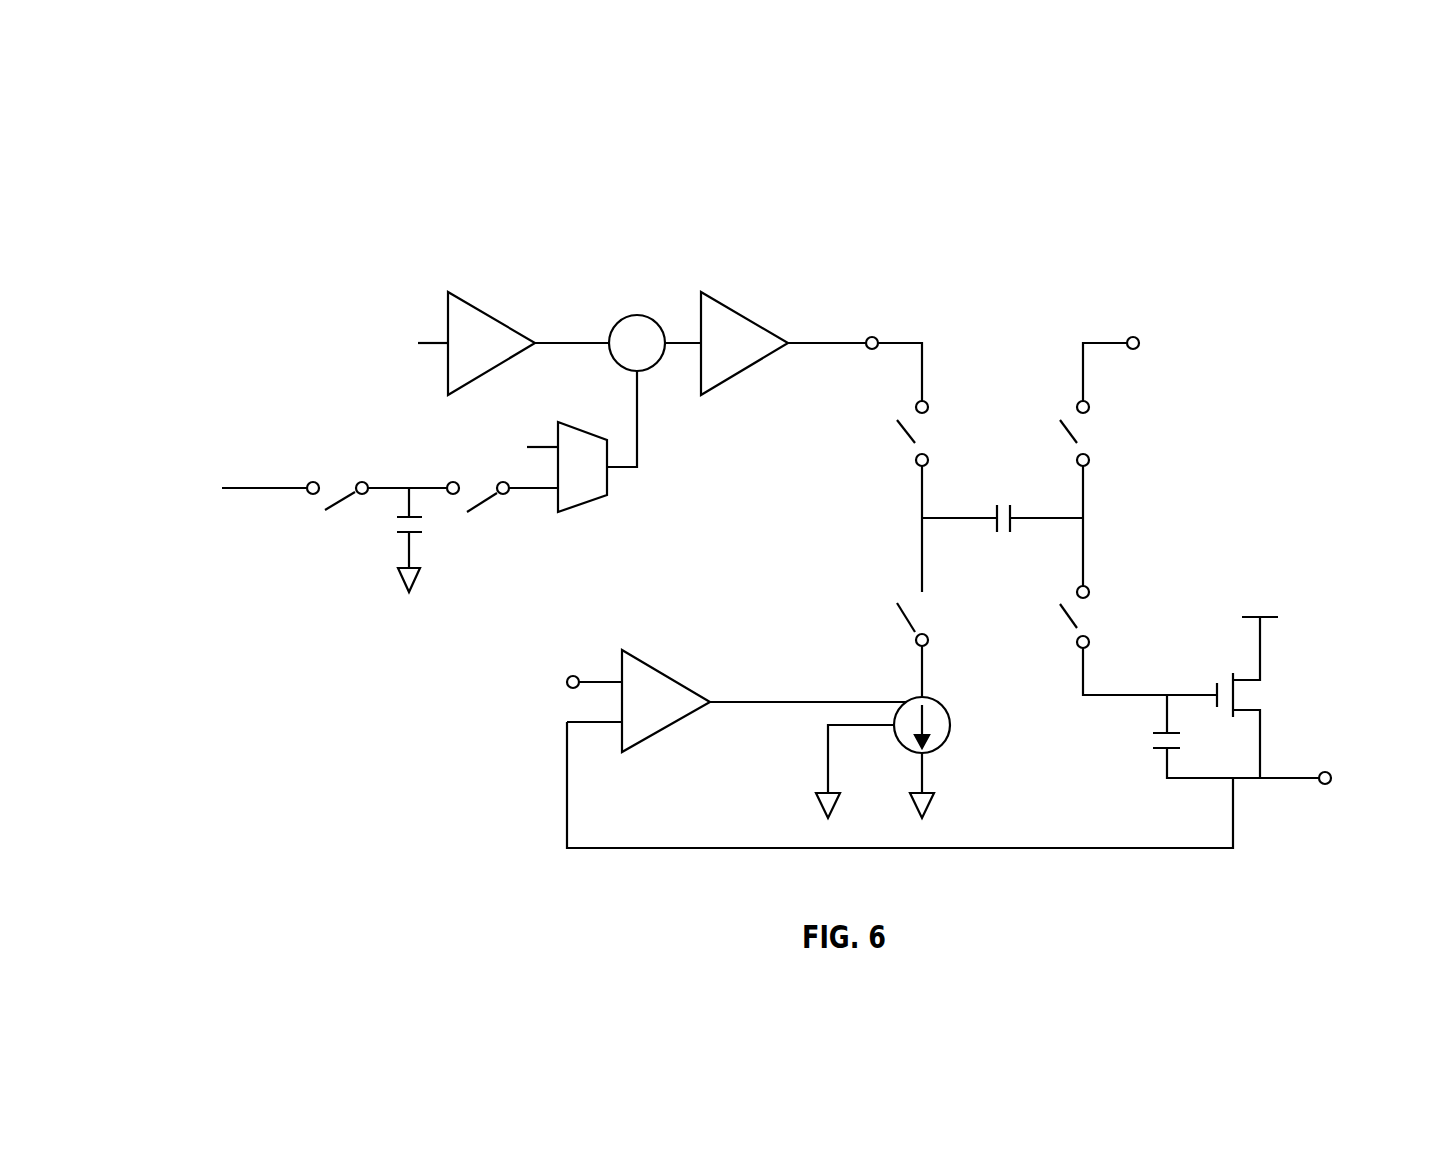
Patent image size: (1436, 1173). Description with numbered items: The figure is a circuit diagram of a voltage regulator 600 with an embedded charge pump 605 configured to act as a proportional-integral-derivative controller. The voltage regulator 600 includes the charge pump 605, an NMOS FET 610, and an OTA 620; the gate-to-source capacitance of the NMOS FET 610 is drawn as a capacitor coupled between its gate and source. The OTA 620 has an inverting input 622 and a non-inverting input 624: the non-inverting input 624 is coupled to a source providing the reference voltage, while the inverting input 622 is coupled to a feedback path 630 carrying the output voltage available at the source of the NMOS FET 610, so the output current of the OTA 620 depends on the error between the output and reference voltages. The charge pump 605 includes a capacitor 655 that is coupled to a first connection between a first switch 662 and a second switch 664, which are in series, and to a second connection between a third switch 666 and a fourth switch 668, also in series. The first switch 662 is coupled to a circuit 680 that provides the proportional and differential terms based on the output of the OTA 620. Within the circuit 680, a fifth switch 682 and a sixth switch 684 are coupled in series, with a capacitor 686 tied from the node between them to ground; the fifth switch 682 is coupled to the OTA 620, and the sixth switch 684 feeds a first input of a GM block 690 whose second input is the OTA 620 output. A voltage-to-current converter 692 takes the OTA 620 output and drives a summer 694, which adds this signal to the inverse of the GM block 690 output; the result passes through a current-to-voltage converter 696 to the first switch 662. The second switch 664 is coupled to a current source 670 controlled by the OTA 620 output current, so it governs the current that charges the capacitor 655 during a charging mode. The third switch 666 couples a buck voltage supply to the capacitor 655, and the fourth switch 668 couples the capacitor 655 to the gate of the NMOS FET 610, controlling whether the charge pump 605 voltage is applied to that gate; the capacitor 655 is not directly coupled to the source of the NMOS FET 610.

The voltage regulator 600 is at (360, 132).
The charge pump 605 is at (1088, 480).
The NMOS FET 610 is at (1237, 700).
The OTA 620 is at (665, 675).
The inverting input 622 is at (590, 720).
The non-inverting input 624 is at (567, 681).
The feedback path 630 is at (1010, 848).
The capacitor 655 is at (1012, 526).
The first switch 662 is at (905, 432).
The second switch 664 is at (905, 622).
The third switch 666 is at (1070, 435).
The fourth switch 668 is at (1072, 618).
The current source 670 is at (940, 703).
The circuit 680 is at (492, 256).
The fifth switch 682 is at (345, 498).
The sixth switch 684 is at (487, 500).
The capacitor 686 is at (407, 512).
The GM block 690 is at (590, 505).
The voltage-to-current converter 692 is at (490, 320).
The summer 694 is at (637, 313).
The current-to-voltage converter 696 is at (745, 318).